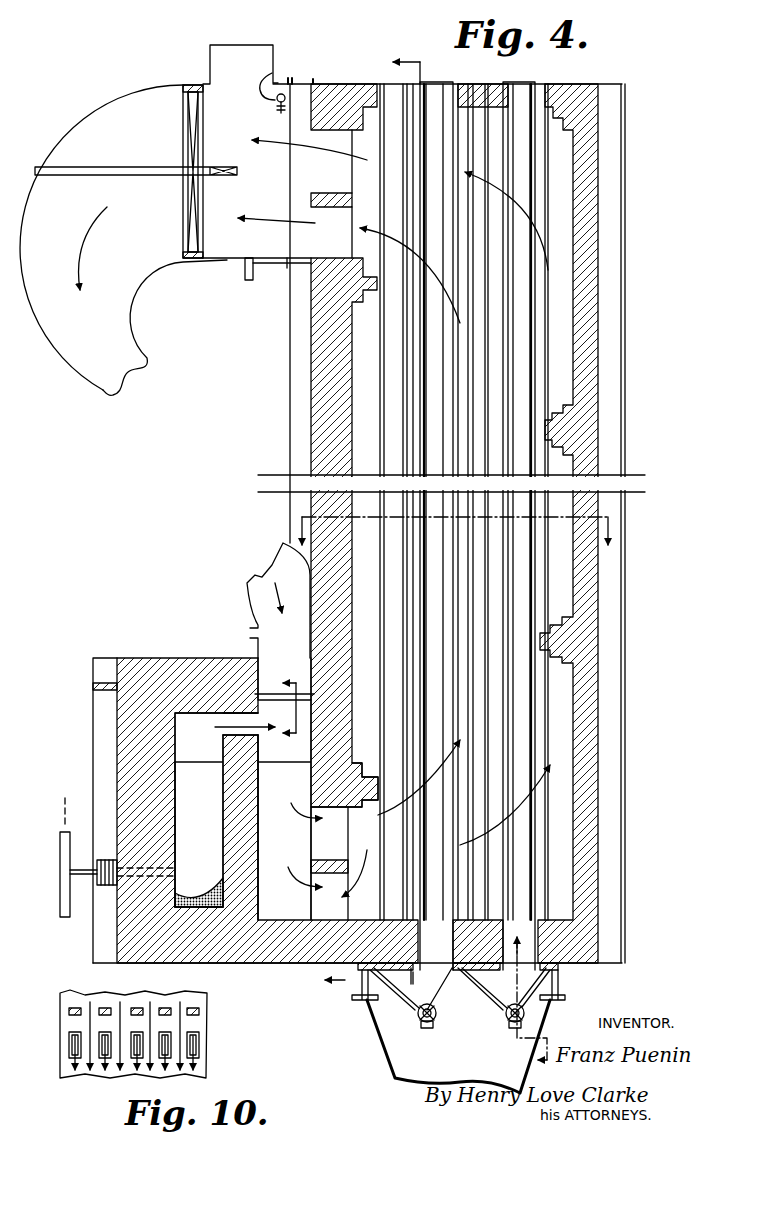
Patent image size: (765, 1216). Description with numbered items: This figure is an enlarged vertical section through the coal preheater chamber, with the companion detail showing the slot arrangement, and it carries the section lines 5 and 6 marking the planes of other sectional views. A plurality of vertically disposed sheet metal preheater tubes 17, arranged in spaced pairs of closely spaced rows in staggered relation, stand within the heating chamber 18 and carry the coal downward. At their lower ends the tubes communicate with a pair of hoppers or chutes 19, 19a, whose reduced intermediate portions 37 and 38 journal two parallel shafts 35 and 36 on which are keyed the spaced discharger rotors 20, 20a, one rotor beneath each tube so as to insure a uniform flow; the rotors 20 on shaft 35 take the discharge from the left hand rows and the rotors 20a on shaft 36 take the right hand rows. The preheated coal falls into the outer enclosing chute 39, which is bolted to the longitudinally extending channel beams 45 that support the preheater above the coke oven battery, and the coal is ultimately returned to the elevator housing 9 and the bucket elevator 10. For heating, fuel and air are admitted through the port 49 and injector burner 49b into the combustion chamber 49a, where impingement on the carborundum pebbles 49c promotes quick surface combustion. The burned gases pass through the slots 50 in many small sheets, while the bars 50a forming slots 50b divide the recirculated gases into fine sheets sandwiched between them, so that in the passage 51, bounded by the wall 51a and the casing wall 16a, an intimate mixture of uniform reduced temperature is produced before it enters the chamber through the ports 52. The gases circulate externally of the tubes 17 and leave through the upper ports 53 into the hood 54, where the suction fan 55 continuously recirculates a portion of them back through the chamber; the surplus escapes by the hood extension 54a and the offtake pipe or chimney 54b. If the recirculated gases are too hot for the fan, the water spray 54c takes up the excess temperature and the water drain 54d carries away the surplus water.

In FIG. 4, the section line 5— 5 is at (455, 544).
In FIG. 4, the section line 6— 6 is at (363, 522).
In FIG. 4, the elevator housing 9 is at (532, 998).
In FIG. 4, the endless bucket elevator 10 is at (292, 711).
In FIG. 4, the casing wall 16a is at (312, 788).
In FIG. 4, the preheater tubes 17 is at (443, 397).
In FIG. 4, the heating chamber 18 is at (355, 341).
In FIG. 4, the hopper or chute 19 is at (445, 986).
In FIG. 4, the hopper or chute 19a is at (495, 1000).
In FIG. 4, the discharger rotors 20 is at (432, 1028).
In FIG. 4, the discharger rotors 20a is at (537, 1017).
In FIG. 4, the shaft 35 is at (424, 1023).
In FIG. 4, the shaft 36 is at (513, 1030).
In FIG. 4, the reduced intermediate portion 37 is at (413, 1010).
In FIG. 4, the reduced intermediate portion 38 is at (506, 1022).
In FIG. 4, the chute 39 is at (383, 1050).
In FIG. 4, the channel beams 45 is at (367, 977).
In FIG. 4, the port 49 is at (195, 749).
In FIG. 4, the combustion chamber 49a is at (182, 810).
In FIG. 4, the injector burner 49b is at (78, 872).
In FIG. 4, the carborundum pebbles 49c is at (173, 900).
In FIG. 4, the slots 50 is at (247, 722).
In FIG. 10, the slots 50 is at (110, 1048).
In FIG. 4, the bars 50a is at (272, 697).
In FIG. 10, the bars 50a is at (172, 1016).
In FIG. 4, the slots 50b is at (281, 698).
In FIG. 10, the slots 50b is at (155, 1010).
In FIG. 4, the passage 51 is at (284, 810).
In FIG. 4, the wall 51a is at (263, 888).
In FIG. 4, the ports 52 is at (340, 830).
In FIG. 4, the ports 53 is at (332, 138).
In FIG. 4, the hood 54 is at (113, 110).
In FIG. 4, the extension 54a is at (108, 335).
In FIG. 4, the offtake pipe or chimney 54b is at (258, 63).
In FIG. 4, the water spray 54c is at (275, 75).
In FIG. 4, the water drain 54d is at (247, 272).
In FIG. 4, the suction fan 55 is at (183, 108).